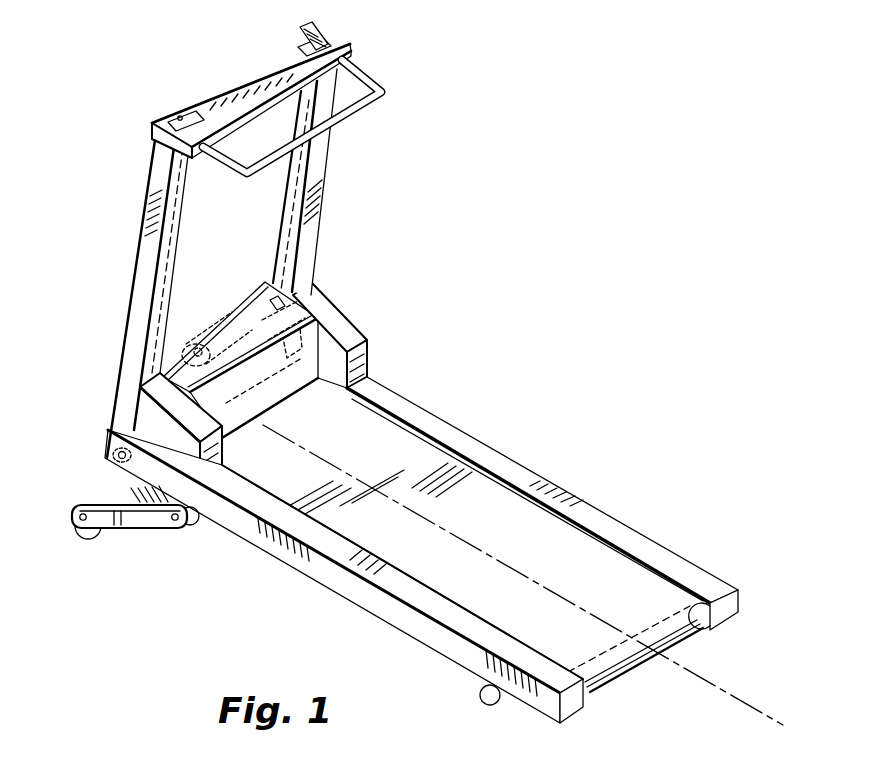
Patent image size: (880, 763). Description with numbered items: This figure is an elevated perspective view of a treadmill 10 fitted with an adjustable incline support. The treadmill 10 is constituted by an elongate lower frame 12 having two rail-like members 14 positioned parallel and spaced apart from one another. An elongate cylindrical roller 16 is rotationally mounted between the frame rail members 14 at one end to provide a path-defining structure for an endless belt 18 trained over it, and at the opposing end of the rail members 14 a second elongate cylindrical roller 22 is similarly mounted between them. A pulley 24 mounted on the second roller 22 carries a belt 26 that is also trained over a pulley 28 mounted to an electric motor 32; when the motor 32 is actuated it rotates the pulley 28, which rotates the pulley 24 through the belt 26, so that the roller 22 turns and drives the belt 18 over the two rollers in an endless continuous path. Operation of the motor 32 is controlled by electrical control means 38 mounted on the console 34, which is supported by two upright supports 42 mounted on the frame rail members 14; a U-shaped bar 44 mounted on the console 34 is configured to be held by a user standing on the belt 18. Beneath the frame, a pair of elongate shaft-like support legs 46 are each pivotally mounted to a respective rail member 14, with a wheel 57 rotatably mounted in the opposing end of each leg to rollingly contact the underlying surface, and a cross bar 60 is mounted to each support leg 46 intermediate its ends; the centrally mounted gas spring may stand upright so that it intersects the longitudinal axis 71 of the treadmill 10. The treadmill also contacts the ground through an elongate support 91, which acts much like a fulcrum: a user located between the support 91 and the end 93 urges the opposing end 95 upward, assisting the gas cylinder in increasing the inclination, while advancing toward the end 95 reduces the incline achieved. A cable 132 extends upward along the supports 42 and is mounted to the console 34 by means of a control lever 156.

The treadmill 10 is at (430, 420).
The lower frame 12 is at (390, 610).
The rail members 14 is at (615, 522).
The roller 16 is at (628, 650).
The endless belt 18 is at (467, 540).
The second roller 22 is at (260, 373).
The pulley 24 is at (355, 322).
The belt 26 is at (322, 292).
The pulley 28 is at (270, 300).
The electric motor 32 is at (226, 335).
The console 34 is at (258, 82).
The electrical control means 38 is at (181, 117).
The upright supports 42 is at (150, 272).
The U-shaped bar 44 is at (390, 88).
The support legs 46 is at (160, 522).
The wheel 57 is at (82, 532).
The cross bar 60 is at (118, 488).
The longitudinal axis 71 is at (760, 712).
The elongate support 91 is at (492, 692).
The end 93 is at (598, 685).
The end 95 is at (106, 455).
The cable 132 is at (308, 170).
The control lever 156 is at (330, 22).